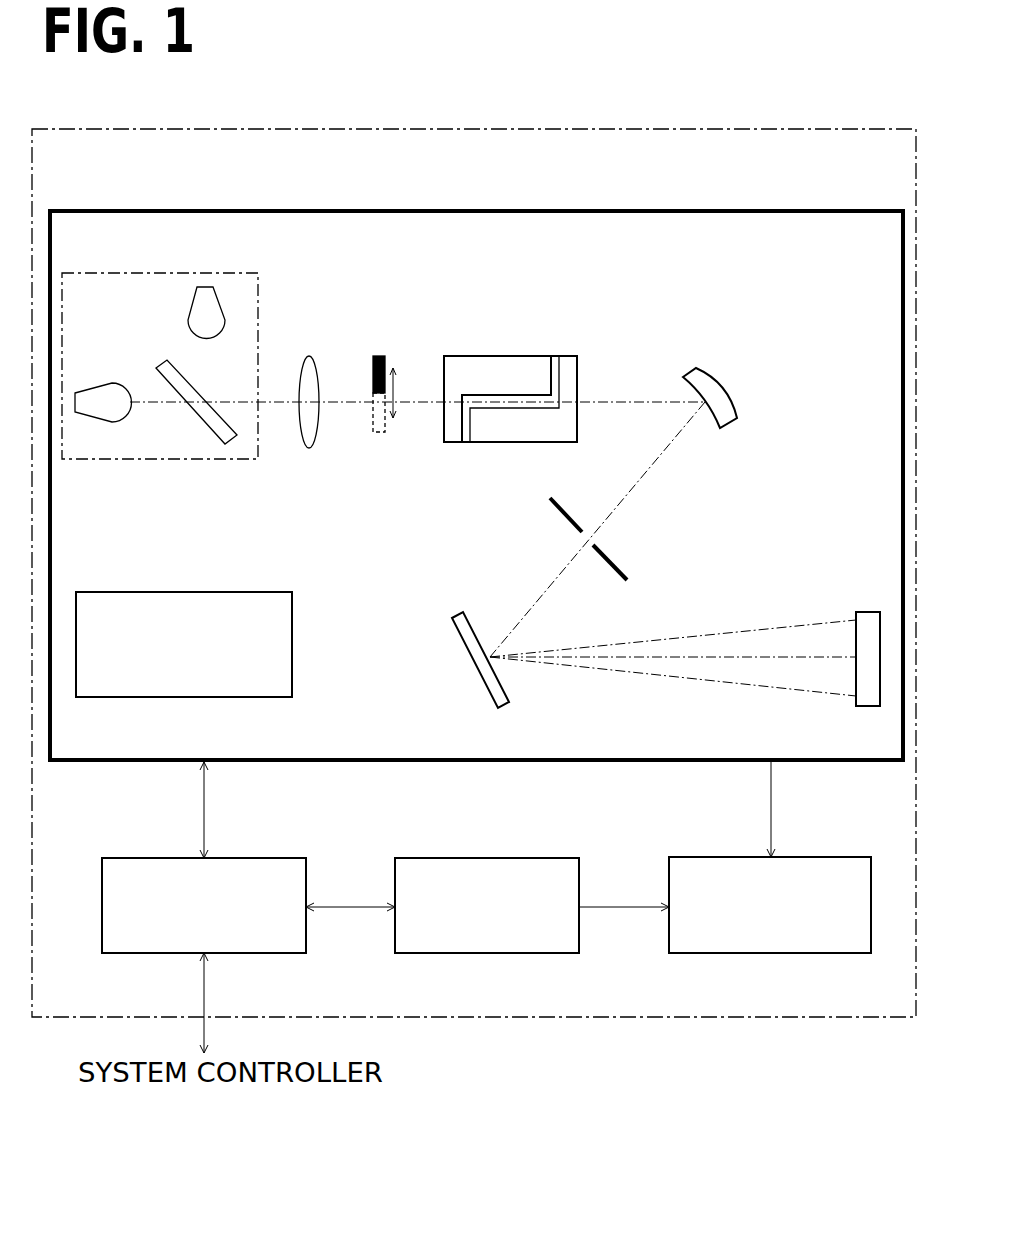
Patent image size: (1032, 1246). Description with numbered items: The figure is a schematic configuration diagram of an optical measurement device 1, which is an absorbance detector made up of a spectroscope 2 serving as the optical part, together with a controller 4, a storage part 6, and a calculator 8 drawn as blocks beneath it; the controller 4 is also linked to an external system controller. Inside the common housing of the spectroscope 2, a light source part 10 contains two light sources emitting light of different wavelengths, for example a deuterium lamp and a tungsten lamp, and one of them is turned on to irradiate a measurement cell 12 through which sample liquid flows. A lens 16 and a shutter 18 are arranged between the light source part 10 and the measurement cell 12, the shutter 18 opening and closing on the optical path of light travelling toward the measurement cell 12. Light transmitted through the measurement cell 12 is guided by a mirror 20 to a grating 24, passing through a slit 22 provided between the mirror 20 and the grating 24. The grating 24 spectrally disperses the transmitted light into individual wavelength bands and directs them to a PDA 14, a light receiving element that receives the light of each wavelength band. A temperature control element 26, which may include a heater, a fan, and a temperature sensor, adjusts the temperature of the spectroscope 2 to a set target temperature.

The optical measurement device 1 is at (615, 129).
The spectroscope 2 is at (697, 208).
The controller 4 is at (247, 953).
The storage part 6 is at (528, 953).
The calculator 8 is at (813, 953).
The light source part 10 is at (195, 272).
The measurement cell 12 is at (503, 356).
The PDA 14 is at (868, 612).
The lens 16 is at (309, 355).
The shutter 18 is at (383, 352).
The mirror 20 is at (722, 400).
The slit 22 is at (612, 560).
The grating 24 is at (480, 675).
The temperature control element 26 is at (292, 610).